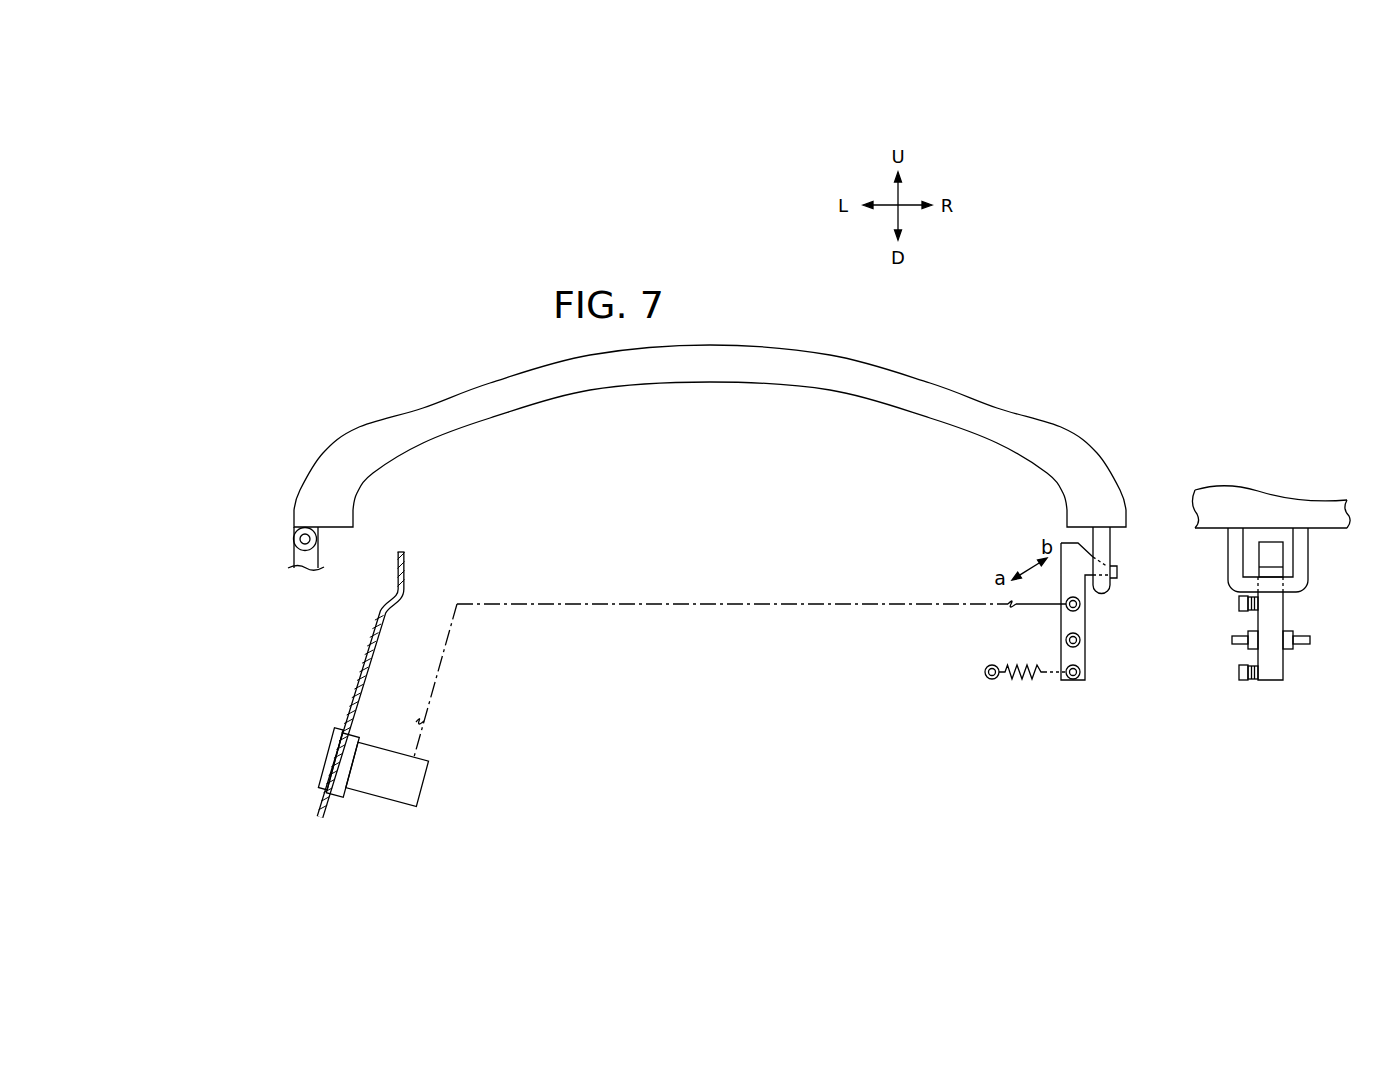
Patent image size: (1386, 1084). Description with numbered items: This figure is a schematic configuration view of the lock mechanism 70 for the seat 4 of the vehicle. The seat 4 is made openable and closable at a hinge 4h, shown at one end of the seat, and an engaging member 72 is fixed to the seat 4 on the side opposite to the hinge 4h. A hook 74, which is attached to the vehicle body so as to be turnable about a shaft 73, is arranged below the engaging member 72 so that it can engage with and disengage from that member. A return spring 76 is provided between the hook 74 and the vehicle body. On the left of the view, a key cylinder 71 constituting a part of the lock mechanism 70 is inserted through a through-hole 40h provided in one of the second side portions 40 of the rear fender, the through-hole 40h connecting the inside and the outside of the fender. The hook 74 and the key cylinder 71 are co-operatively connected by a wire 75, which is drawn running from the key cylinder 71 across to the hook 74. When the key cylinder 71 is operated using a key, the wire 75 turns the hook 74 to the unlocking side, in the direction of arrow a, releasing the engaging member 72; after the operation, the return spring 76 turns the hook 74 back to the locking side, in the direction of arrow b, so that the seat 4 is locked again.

The seat 4 is at (980, 403).
The hinge 4h is at (293, 541).
The second side portion 40 is at (360, 668).
The through-hole 40h is at (337, 760).
The lock mechanism 70 is at (1231, 362).
The key cylinder 71 is at (418, 803).
The engaging member 72 is at (1105, 592).
The shaft 73 is at (1082, 640).
The hook 74 is at (1117, 568).
The wire 75 is at (420, 735).
The return spring 76 is at (1027, 693).